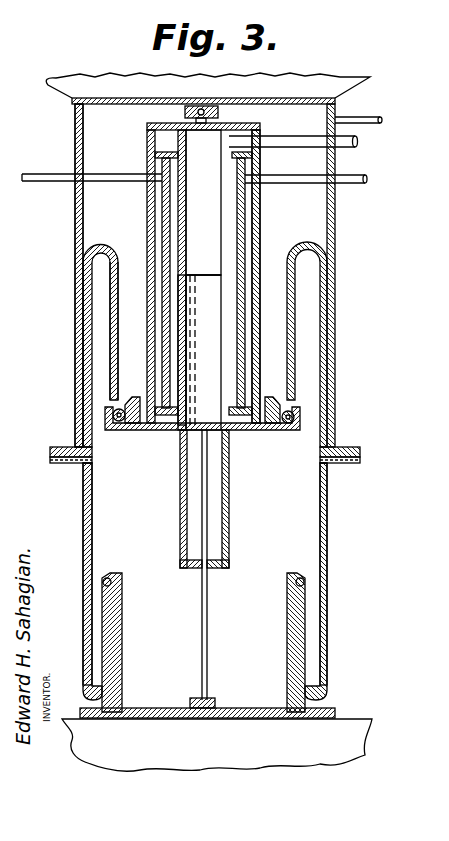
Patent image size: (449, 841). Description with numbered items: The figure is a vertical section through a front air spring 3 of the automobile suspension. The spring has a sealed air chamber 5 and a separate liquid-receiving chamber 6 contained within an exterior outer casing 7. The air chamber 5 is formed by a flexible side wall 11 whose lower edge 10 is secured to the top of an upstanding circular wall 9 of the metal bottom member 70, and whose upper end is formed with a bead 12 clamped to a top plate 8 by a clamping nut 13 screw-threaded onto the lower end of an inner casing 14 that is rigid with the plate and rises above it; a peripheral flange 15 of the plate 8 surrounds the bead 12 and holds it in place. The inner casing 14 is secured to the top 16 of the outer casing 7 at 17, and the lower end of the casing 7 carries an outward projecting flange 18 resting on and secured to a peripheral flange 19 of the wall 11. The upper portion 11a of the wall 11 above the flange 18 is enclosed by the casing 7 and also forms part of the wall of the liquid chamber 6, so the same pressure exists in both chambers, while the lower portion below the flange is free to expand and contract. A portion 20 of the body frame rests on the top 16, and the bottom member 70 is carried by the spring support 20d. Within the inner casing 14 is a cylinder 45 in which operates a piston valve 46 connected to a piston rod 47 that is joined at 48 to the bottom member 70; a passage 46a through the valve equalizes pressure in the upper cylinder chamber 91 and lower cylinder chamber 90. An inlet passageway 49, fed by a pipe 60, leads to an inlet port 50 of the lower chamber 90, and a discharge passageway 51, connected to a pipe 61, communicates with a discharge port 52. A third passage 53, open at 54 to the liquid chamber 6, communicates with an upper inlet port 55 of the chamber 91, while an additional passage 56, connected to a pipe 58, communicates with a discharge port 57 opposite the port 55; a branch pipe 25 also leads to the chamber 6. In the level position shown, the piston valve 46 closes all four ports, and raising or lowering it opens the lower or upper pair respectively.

The front air spring 3 is at (72, 262).
The air chamber 5 is at (142, 499).
The liquid-receiving chamber 6 is at (105, 225).
The outer casing 7 is at (336, 240).
The top plate 8 is at (132, 430).
The circular wall 9 is at (115, 638).
The lower edge 10 is at (108, 578).
The flexible side wall 11 is at (83, 535).
The upper portion of the flexible wall 11a is at (296, 290).
The bead 12 is at (113, 415).
The clamping nut 13 is at (138, 397).
The inner casing 14 is at (148, 328).
The peripheral flange 15 is at (298, 416).
The top of the outer casing 16 is at (300, 98).
The securing point 17 is at (194, 107).
The outward projecting flange 18 is at (354, 448).
The peripheral flange 19 is at (345, 463).
The frame portion 20 is at (70, 80).
The spring support 20d is at (345, 732).
The branch pipe 25 is at (372, 118).
The cylinder 45 is at (246, 240).
The piston valve 46 is at (214, 396).
The passage 46a is at (190, 303).
The piston rod 47 is at (208, 598).
The rod connection 48 is at (210, 698).
The inlet passageway 49 is at (160, 232).
The inlet port 50 is at (168, 416).
The discharge passageway 51 is at (252, 262).
The discharge port 52 is at (240, 416).
The third passage 53 is at (178, 198).
The opening 54 is at (148, 142).
The upper inlet port 55 is at (178, 283).
The additional passage 56 is at (240, 212).
The discharge port 57 is at (222, 275).
The pipe 58 is at (355, 144).
The pipe 60 is at (44, 174).
The pipe 61 is at (367, 184).
The bottom member 70 is at (152, 718).
The lower cylinder chamber 90 is at (229, 492).
The upper cylinder chamber 91 is at (213, 169).